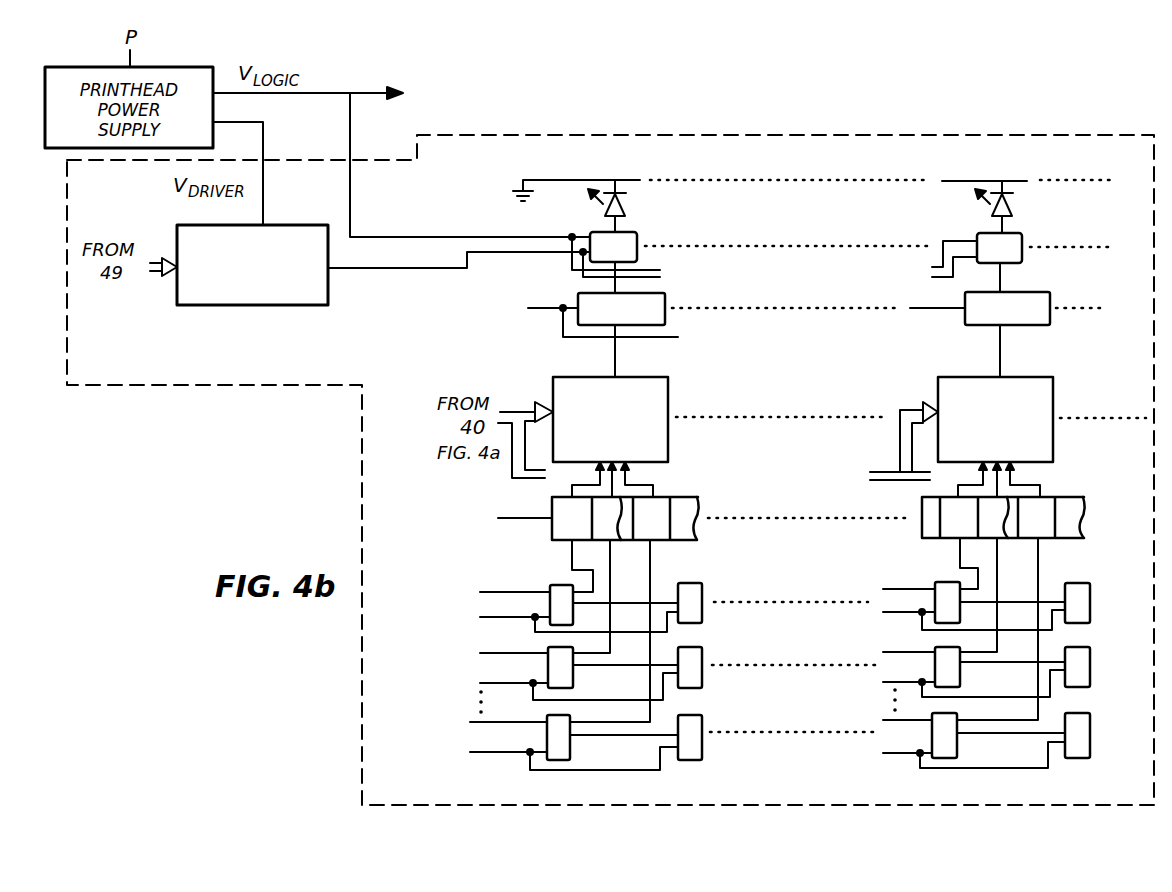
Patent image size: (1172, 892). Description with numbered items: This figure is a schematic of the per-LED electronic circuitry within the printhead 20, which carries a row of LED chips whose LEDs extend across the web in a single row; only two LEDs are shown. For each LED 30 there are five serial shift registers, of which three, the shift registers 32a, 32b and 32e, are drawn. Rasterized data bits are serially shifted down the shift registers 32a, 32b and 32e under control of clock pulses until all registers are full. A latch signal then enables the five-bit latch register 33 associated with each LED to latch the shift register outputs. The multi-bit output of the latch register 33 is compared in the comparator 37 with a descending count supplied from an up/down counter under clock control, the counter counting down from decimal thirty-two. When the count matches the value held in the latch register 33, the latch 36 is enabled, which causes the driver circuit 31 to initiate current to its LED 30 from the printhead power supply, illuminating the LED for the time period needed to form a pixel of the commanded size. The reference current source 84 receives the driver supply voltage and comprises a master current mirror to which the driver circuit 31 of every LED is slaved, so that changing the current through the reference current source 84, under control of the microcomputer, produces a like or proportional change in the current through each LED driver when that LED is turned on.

The printhead 20 is at (737, 130).
The LED 30 is at (628, 206).
The driver circuit 31 is at (598, 230).
The serial shift register 32a is at (471, 602).
The serial shift register 32b is at (471, 666).
The serial shift register 32e is at (471, 742).
The five-bit latch register 33 is at (532, 503).
The latch 36 is at (580, 296).
The comparator 37 is at (566, 377).
The reference current source 84 is at (190, 225).